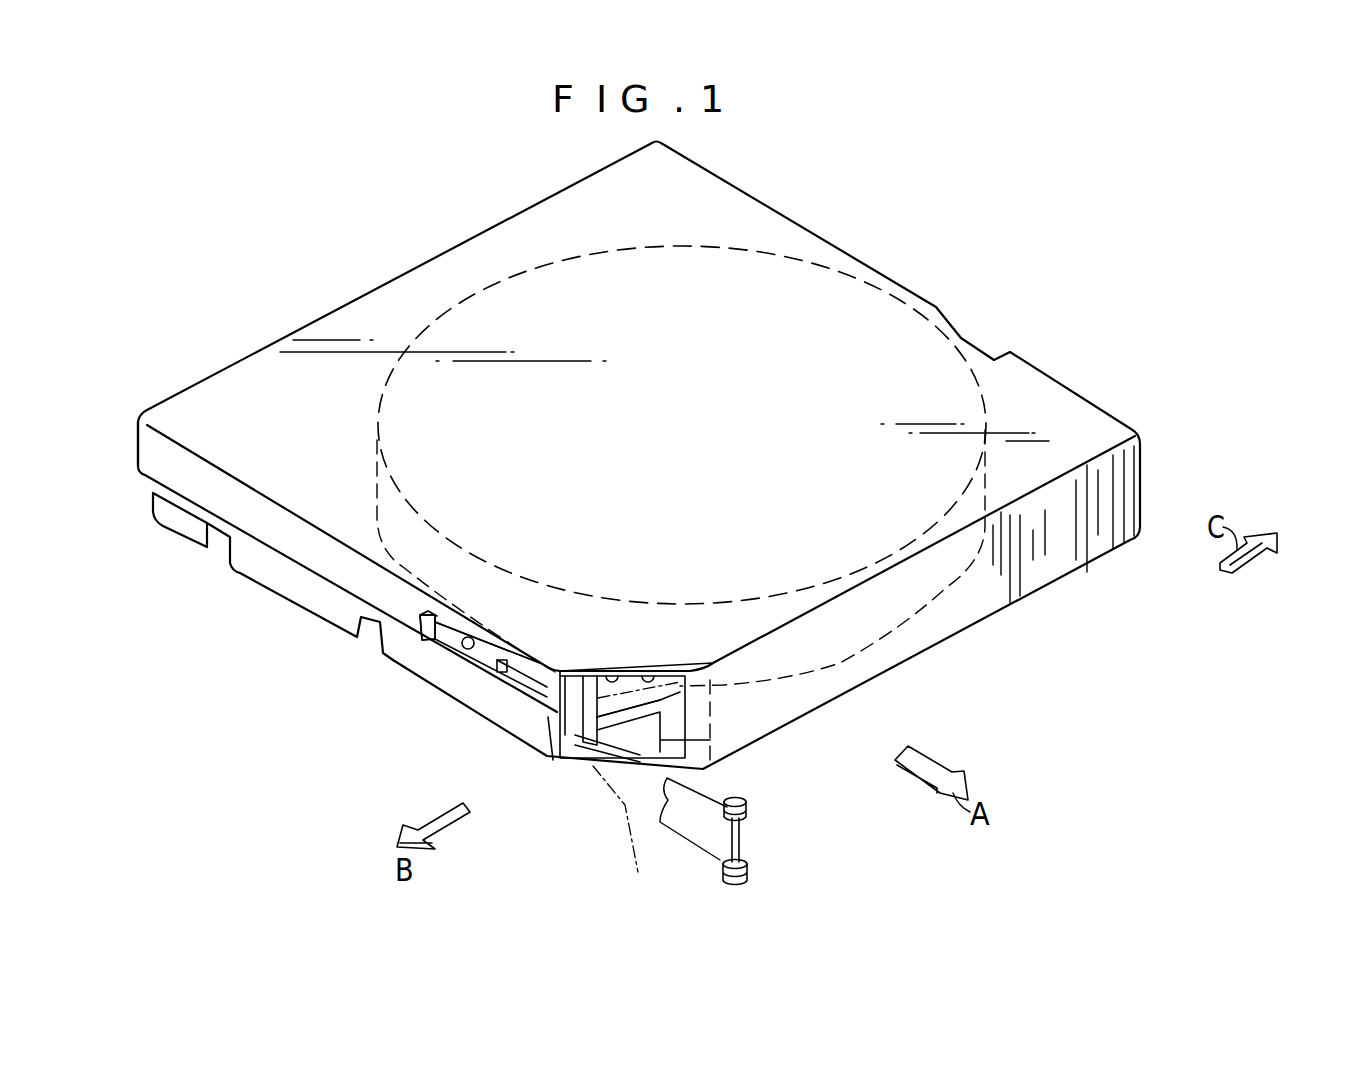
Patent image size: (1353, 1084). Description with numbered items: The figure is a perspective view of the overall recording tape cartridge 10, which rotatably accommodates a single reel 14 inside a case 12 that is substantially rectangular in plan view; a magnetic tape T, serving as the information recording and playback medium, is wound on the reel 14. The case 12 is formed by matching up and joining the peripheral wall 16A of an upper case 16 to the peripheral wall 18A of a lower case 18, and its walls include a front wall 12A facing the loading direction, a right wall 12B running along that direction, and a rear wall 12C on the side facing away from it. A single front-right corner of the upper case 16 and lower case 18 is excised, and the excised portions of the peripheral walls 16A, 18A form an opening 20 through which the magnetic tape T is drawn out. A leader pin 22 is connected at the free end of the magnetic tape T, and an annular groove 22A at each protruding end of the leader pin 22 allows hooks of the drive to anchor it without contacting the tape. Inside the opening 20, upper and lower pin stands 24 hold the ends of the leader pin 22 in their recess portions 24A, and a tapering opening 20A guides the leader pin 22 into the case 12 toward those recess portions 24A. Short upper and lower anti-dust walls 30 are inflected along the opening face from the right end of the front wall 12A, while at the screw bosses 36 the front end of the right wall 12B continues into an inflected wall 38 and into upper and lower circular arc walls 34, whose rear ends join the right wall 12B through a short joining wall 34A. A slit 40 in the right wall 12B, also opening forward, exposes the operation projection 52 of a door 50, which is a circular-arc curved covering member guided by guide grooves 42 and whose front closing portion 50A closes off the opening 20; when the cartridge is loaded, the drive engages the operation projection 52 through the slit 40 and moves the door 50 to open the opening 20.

The recording tape cartridge 10 is at (990, 228).
The case 12 is at (1205, 398).
The front wall 12A is at (1113, 590).
The right wall 12B is at (211, 626).
The rear wall 12C is at (560, 188).
The reel 14 is at (843, 312).
The upper case 16 is at (1118, 418).
The peripheral wall 16A is at (987, 552).
The lower case 18 is at (1153, 499).
The peripheral wall 18A is at (987, 592).
The opening 20 is at (609, 676).
The tapering opening 20A is at (705, 649).
The leader pin 22 is at (770, 817).
The annular groove 22A is at (745, 820).
The pin stand 24 is at (737, 690).
The recess portion 24A is at (690, 669).
The anti-dust wall 30 is at (705, 738).
The circular arc wall 34 is at (505, 672).
The joining wall 34A is at (487, 670).
The screw boss 36 is at (572, 752).
The inflected wall 38 is at (558, 668).
The slit 40 is at (505, 607).
The guide groove 42 is at (607, 773).
The door 50 is at (628, 708).
The closing portion 50A is at (590, 697).
The operation projection 52 is at (417, 637).
The magnetic tape T is at (680, 825).